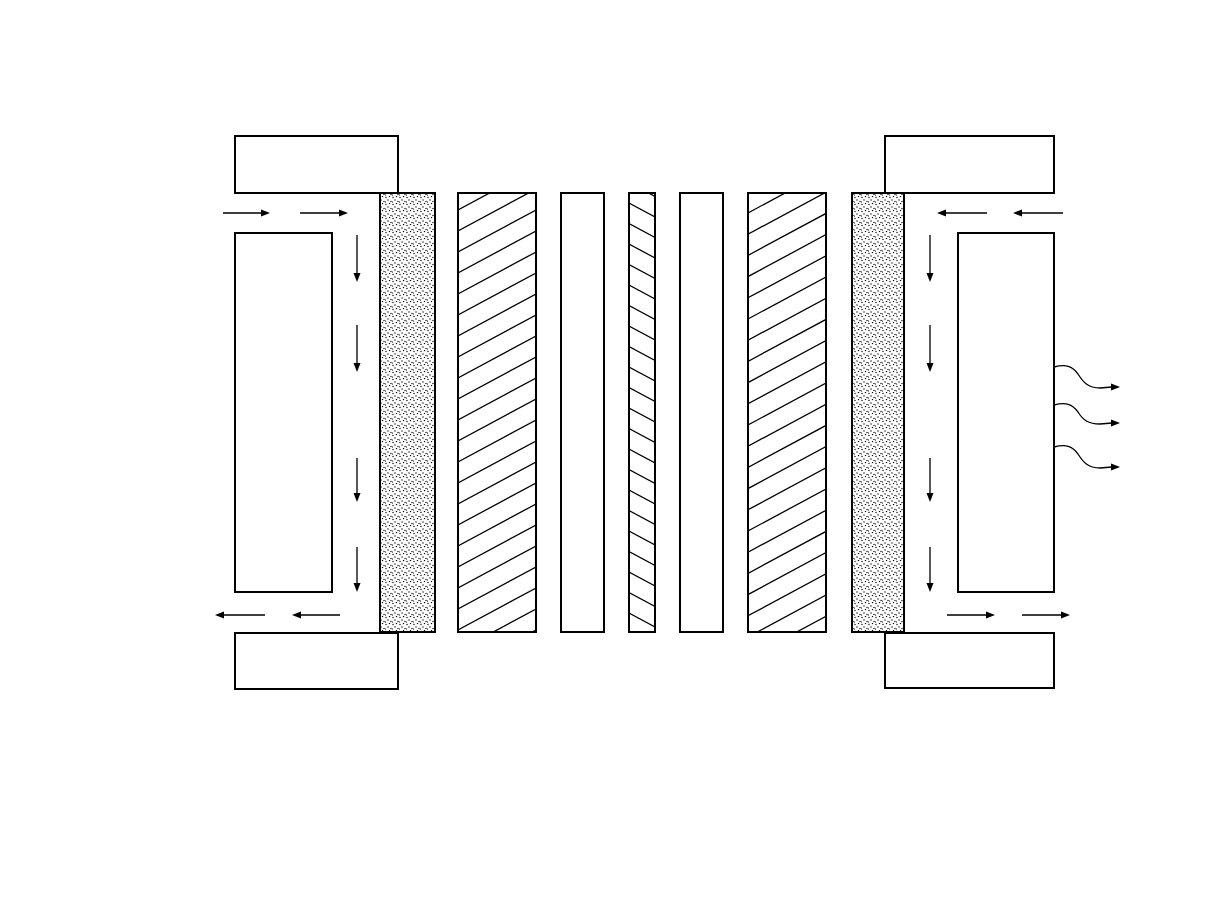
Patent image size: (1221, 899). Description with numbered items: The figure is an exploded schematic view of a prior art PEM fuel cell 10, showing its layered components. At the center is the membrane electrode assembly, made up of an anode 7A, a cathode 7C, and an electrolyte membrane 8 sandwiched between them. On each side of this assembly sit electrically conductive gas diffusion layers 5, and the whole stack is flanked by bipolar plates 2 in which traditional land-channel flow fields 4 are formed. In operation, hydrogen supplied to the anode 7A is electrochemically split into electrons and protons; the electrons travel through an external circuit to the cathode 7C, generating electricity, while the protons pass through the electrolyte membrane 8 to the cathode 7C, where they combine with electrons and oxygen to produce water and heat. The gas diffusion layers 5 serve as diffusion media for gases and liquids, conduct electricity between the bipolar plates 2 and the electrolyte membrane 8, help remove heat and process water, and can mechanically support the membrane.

The PEM fuel cell 10 is at (834, 62).
The bipolar plates 2 is at (293, 689).
The land-channel flow fields 4 is at (410, 633).
The gas diffusion layers 5 is at (508, 632).
The anode 7A is at (588, 632).
The electrolyte membrane 8 is at (648, 632).
The cathode 7C is at (710, 632).